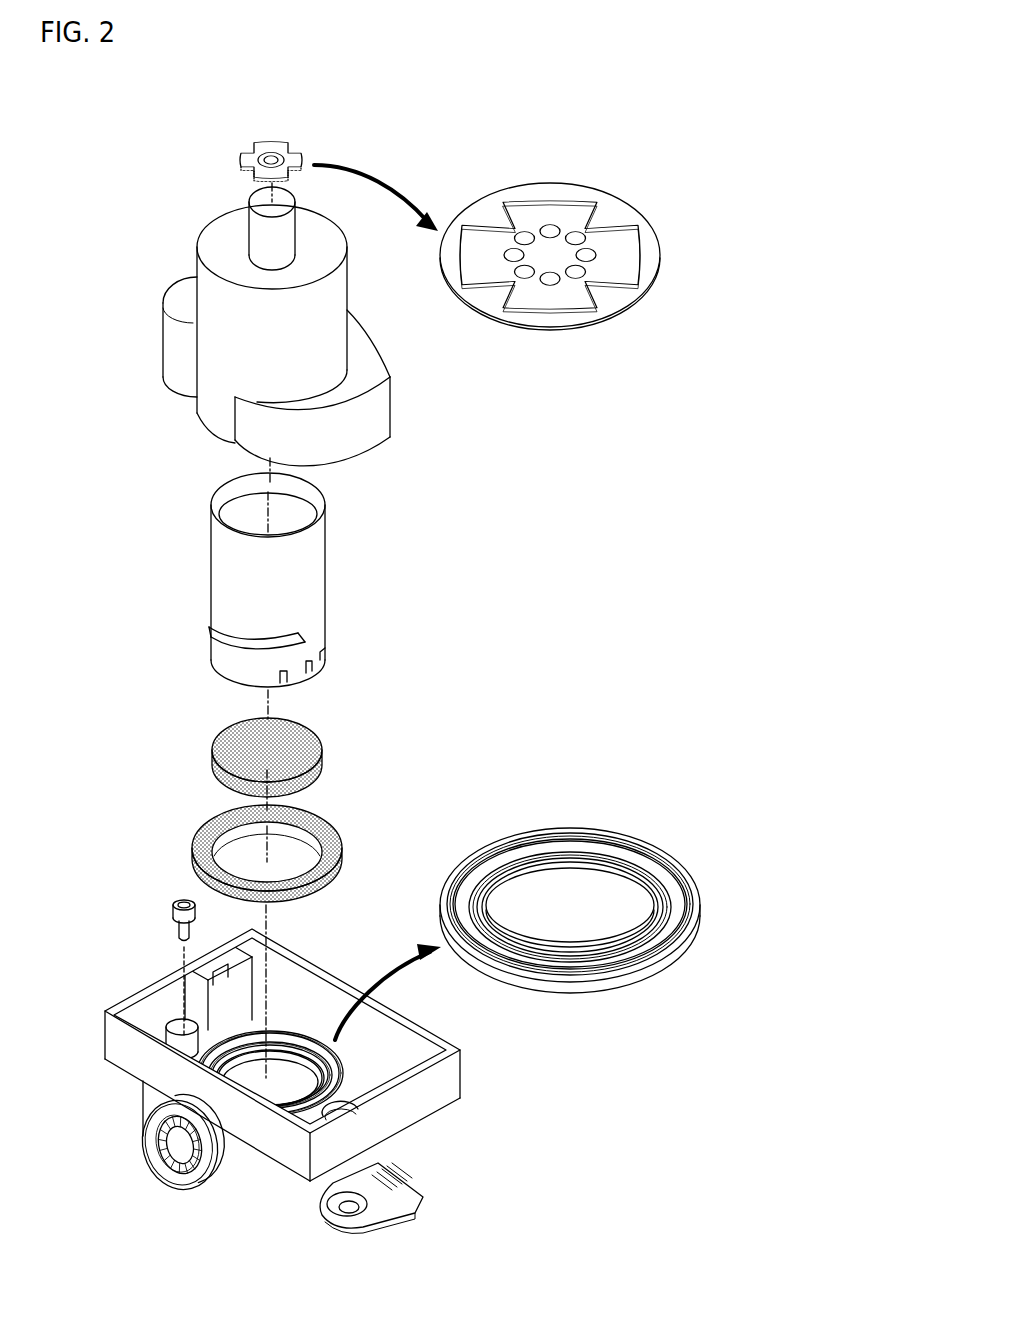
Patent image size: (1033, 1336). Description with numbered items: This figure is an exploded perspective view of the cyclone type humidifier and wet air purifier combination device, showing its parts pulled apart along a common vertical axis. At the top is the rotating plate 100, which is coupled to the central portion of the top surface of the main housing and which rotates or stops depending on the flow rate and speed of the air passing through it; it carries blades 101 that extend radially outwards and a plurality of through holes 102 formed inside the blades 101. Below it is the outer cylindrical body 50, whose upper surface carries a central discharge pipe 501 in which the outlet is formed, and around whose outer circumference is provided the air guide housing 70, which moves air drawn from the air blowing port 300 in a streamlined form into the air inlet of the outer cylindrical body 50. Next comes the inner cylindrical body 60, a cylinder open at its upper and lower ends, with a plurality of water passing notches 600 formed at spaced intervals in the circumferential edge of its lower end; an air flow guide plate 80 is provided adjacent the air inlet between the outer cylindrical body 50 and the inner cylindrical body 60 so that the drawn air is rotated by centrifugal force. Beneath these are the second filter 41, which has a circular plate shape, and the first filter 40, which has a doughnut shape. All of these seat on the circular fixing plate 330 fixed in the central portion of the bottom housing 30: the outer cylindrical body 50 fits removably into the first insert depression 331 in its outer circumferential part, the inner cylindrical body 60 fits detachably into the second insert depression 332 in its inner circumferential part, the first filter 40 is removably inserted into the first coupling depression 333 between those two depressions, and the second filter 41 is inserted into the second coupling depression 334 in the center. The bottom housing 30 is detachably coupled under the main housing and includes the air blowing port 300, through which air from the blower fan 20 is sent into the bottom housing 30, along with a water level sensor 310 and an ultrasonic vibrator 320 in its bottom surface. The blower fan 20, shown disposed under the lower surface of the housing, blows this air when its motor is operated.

The blower fan 20 is at (150, 1134).
The bottom housing 30 is at (233, 1040).
The first filter 40 is at (174, 835).
The second filter 41 is at (193, 737).
The outer cylindrical body 50 is at (217, 315).
The inner cylindrical body 60 is at (234, 580).
The air guide housing 70 is at (377, 415).
The air flow guide plate 80 is at (211, 626).
The rotating plate 100 is at (231, 154).
The blades 101 is at (630, 250).
The through holes 102 is at (551, 232).
The air blowing port 300 is at (238, 997).
The water level sensor 310 is at (176, 903).
The ultrasonic vibrator 320 is at (322, 1198).
The circular fixing plate 330 is at (588, 853).
The first insert depression 331 is at (695, 882).
The second insert depression 332 is at (672, 868).
The first coupling depression 333 is at (468, 891).
The second coupling depression 334 is at (530, 888).
The discharge pipe 501 is at (256, 228).
The water passing notches 600 is at (314, 665).